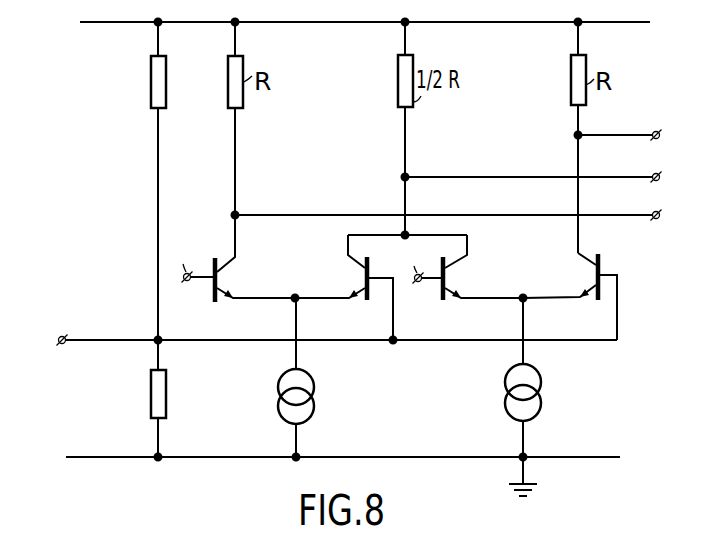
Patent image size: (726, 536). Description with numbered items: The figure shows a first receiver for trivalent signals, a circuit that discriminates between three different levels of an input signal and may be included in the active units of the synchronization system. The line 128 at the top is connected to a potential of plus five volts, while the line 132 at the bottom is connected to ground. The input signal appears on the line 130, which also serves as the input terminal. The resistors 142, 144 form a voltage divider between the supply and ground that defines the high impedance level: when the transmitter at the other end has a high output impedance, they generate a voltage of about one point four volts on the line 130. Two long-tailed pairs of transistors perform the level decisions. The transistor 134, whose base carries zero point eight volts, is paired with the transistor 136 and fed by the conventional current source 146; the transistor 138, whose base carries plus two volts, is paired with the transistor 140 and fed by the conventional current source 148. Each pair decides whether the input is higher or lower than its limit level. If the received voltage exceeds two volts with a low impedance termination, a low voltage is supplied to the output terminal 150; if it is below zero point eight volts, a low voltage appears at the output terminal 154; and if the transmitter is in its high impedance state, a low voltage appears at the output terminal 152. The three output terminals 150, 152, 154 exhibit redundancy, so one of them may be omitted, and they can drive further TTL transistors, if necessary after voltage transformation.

The line 128 is at (84, 26).
The line 130 is at (65, 336).
The line 132 is at (90, 455).
The transistor 134 is at (211, 290).
The transistor 136 is at (377, 290).
The transistor 138 is at (442, 290).
The transistor 140 is at (600, 267).
The resistor 142 is at (173, 77).
The resistor 144 is at (167, 397).
The current source 146 is at (316, 406).
The current source 148 is at (543, 404).
The output terminal 150 is at (655, 130).
The output terminal 152 is at (655, 173).
The output terminal 154 is at (655, 212).